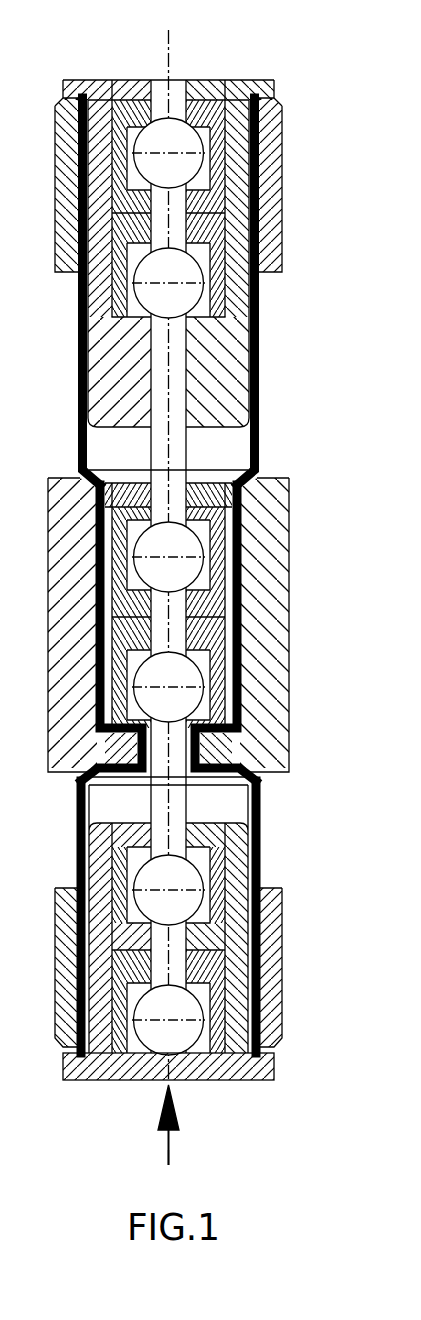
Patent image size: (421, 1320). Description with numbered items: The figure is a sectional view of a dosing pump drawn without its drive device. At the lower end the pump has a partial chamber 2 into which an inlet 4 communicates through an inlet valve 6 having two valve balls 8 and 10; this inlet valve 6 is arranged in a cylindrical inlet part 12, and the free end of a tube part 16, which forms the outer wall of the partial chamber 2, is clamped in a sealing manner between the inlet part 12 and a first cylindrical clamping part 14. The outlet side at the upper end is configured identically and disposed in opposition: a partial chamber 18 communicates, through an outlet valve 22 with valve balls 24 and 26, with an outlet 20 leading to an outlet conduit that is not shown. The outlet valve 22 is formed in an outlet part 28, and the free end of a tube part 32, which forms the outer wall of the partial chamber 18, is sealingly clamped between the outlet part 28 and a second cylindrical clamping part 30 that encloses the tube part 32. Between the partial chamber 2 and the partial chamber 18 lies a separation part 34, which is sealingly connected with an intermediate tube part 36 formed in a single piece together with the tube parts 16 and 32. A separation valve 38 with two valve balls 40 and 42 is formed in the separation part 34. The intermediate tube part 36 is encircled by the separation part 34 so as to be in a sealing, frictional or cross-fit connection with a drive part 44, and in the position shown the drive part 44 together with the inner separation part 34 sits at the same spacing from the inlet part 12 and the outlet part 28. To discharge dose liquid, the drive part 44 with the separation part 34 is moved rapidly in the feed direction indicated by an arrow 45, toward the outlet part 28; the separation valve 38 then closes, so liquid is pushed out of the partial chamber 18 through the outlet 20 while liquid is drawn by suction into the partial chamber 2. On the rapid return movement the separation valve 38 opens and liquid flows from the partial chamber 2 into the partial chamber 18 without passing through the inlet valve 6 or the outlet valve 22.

The partial chamber 2 is at (235, 803).
The inlet 4 is at (178, 1088).
The inlet valve 6 is at (215, 1018).
The valve ball 8 is at (262, 860).
The valve ball 10 is at (262, 1007).
The inlet part 12 is at (263, 1062).
The first cylindrical clamping part 14 is at (280, 930).
The tube part 16 is at (262, 868).
The partial chamber 18 is at (240, 437).
The outlet 20 is at (169, 80).
The outlet valve 22 is at (280, 133).
The valve ball 24 is at (262, 213).
The valve ball 26 is at (190, 292).
The outlet part 28 is at (245, 76).
The second cylindrical clamping part 30 is at (190, 173).
The tube part 32 is at (262, 342).
The separation part 34 is at (243, 634).
The intermediate tube part 36 is at (190, 573).
The separation valve 38 is at (243, 523).
The valve ball 40 is at (240, 599).
The valve ball 42 is at (240, 717).
The drive part 44 is at (285, 682).
The arrow 45 is at (172, 1157).